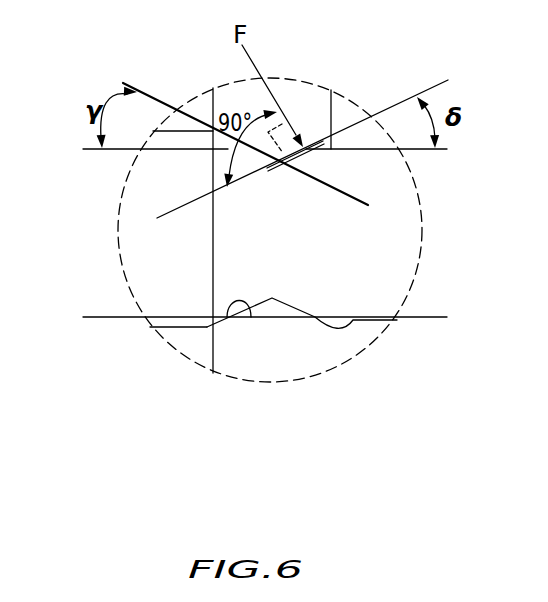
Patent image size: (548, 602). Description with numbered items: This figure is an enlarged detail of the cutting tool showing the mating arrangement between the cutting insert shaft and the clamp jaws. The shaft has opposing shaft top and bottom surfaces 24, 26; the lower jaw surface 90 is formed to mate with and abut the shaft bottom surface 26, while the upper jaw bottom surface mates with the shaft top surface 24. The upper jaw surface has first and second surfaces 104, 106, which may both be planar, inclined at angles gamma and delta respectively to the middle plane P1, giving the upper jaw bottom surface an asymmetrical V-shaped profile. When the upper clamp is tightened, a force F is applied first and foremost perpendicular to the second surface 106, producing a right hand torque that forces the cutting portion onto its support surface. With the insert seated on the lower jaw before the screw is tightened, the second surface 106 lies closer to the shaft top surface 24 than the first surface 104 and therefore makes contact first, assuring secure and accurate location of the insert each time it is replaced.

The shaft top surface 24 is at (236, 148).
The shaft bottom surface 26 is at (242, 317).
The lower jaw surface 90 is at (228, 317).
The first surface 104 is at (222, 110).
The second surface 106 is at (317, 146).
The plane P1 is at (423, 316).